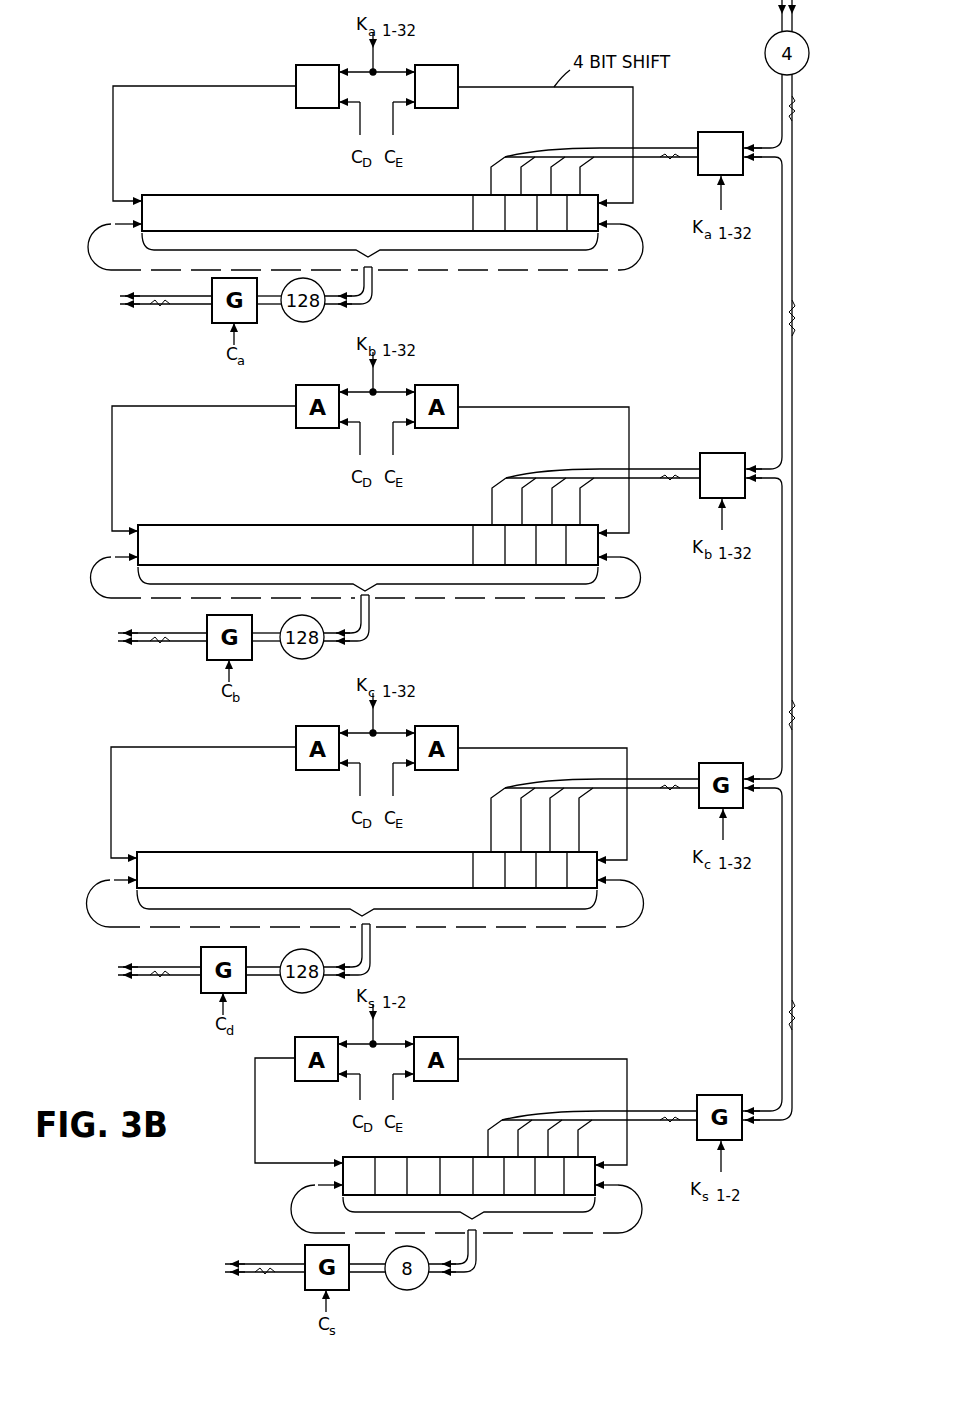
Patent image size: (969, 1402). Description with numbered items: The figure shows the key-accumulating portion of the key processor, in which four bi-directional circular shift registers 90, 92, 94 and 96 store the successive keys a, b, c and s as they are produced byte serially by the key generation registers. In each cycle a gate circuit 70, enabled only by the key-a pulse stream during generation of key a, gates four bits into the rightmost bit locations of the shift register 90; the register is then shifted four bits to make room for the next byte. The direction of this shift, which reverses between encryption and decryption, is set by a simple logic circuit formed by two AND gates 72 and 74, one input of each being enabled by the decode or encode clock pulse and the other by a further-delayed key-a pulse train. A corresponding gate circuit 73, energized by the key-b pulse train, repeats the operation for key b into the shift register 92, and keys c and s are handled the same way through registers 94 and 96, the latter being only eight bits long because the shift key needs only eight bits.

The gate circuit 70 is at (713, 135).
The AND gate 72 is at (306, 66).
The gate circuit 73 is at (733, 455).
The AND gate 74 is at (449, 70).
The shift register 90 is at (203, 195).
The shift register 92 is at (218, 525).
The shift register 94 is at (197, 852).
The shift register 96 is at (436, 1155).